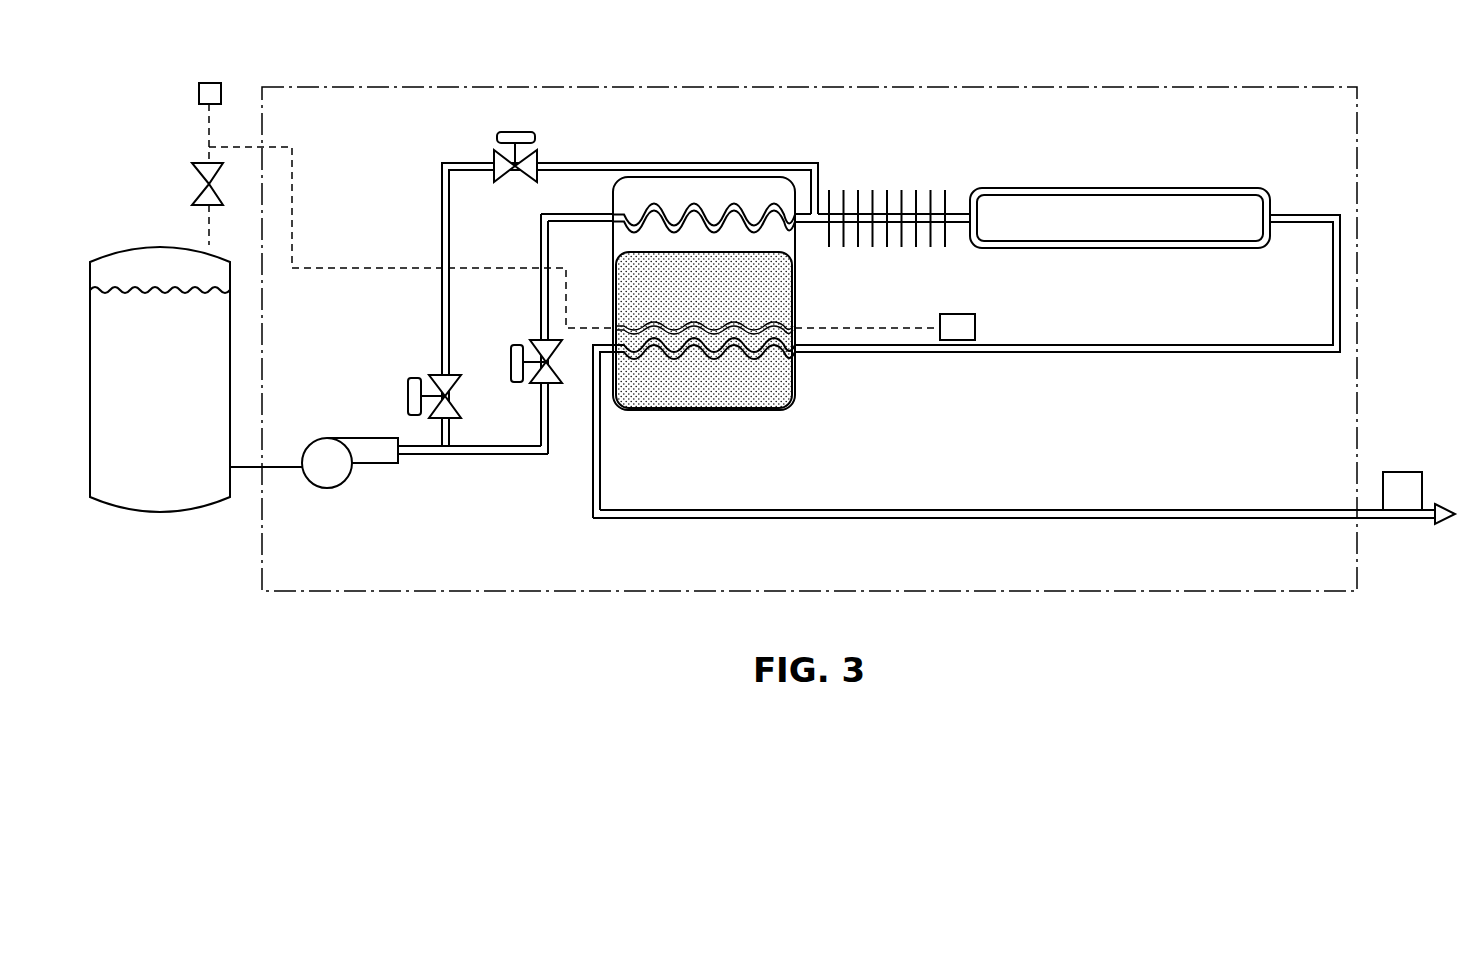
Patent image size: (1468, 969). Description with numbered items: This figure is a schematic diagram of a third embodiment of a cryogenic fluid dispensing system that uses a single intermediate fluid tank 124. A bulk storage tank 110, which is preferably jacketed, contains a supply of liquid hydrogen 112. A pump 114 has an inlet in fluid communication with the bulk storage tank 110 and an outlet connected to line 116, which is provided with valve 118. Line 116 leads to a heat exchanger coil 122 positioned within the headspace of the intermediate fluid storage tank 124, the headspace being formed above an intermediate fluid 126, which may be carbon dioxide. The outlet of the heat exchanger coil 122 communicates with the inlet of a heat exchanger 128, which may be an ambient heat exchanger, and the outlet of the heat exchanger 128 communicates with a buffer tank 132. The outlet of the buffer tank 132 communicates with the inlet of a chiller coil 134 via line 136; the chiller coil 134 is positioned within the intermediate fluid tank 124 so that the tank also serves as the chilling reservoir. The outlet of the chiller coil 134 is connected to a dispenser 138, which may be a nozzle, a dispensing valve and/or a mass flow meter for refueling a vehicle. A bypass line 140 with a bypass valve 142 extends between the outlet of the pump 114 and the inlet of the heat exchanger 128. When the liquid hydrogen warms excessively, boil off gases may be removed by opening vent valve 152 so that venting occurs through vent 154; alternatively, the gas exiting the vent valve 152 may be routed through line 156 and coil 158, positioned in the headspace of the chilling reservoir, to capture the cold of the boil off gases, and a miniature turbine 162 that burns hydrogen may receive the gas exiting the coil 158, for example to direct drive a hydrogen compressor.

The bulk storage tank 110 is at (150, 250).
The liquid hydrogen 112 is at (137, 393).
The pump 114 is at (327, 489).
The line 116 is at (498, 455).
The valve 118 is at (540, 342).
The heat exchanger coil 122 is at (733, 207).
The intermediate fluid storage tank 124 is at (797, 245).
The intermediate fluid 126 is at (680, 400).
The heat exchanger 128 is at (918, 200).
The buffer tank 132 is at (1100, 188).
The chiller coil 134 is at (753, 358).
The line 136 is at (1133, 352).
The dispenser 138 is at (1402, 472).
The bypass line 140 is at (442, 227).
The bypass valve 142 is at (512, 132).
The vent valve 152 is at (205, 168).
The vent 154 is at (209, 83).
The line 156 is at (370, 273).
The coil 158 is at (770, 322).
The miniature turbine 162 is at (957, 314).